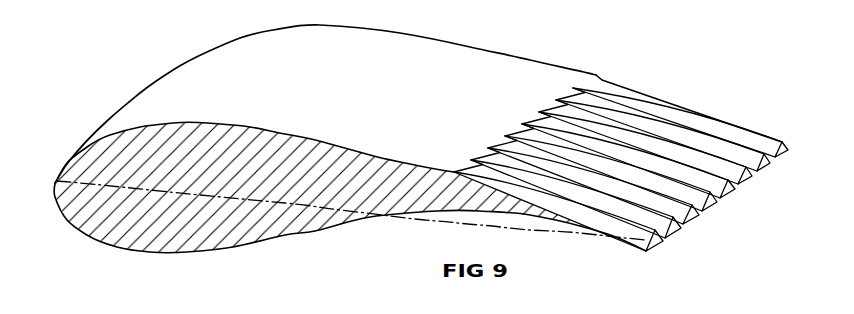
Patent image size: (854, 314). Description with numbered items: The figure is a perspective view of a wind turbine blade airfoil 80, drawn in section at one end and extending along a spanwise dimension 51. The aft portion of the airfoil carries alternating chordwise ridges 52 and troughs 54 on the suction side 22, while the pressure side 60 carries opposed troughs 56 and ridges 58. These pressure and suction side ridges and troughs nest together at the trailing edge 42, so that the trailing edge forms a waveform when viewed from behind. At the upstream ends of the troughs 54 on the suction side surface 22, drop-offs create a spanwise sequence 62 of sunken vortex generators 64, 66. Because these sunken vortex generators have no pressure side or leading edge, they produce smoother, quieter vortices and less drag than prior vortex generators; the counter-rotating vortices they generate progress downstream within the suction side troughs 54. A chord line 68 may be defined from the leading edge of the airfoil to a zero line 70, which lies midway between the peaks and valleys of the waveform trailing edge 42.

The suction side 22 is at (432, 110).
The trailing edge 42 is at (707, 207).
The spanwise dimension 51 is at (255, 127).
The chordwise ridges 52 is at (740, 123).
The troughs 54 is at (617, 103).
The opposed troughs 56 is at (762, 170).
The ridges 58 is at (728, 195).
The pressure side 60 is at (314, 236).
The spanwise sequence 62 is at (604, 72).
The sunken vortex generator 64 is at (528, 132).
The sunken vortex generator 66 is at (535, 123).
The chord line 68 is at (206, 189).
The zero line 70 is at (635, 249).
The blade airfoil 80 is at (373, 232).